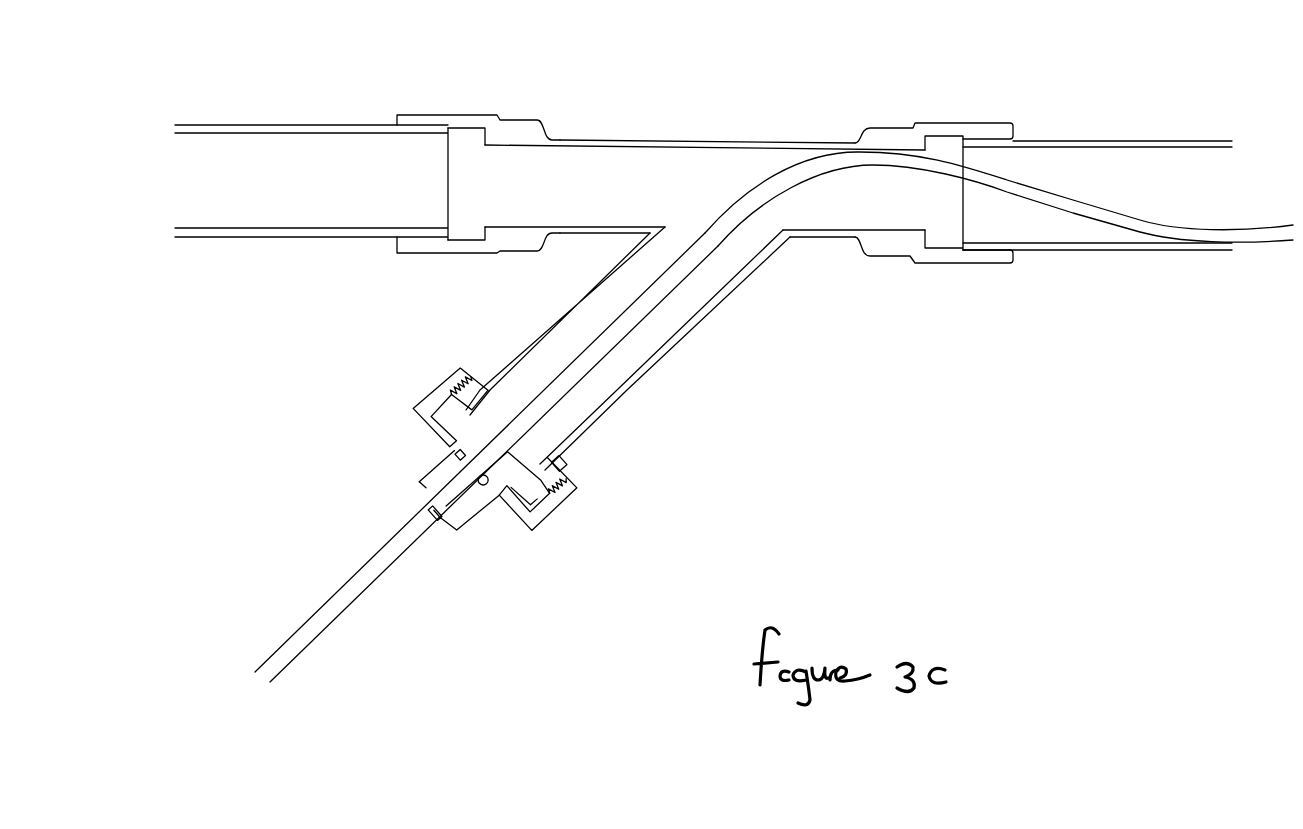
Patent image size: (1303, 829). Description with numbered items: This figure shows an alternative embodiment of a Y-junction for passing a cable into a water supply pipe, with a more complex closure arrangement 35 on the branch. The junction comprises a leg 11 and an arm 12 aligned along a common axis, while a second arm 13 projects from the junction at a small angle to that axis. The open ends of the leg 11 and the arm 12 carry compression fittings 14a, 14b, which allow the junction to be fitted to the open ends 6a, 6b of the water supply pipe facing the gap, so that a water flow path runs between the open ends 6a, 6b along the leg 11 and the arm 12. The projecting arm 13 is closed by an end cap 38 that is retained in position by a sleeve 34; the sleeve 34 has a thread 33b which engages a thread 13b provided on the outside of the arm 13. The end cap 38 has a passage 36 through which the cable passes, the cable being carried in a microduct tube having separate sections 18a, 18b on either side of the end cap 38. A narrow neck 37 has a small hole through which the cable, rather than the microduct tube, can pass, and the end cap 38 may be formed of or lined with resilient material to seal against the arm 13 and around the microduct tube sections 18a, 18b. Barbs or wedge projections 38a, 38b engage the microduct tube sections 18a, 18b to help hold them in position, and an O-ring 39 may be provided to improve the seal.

The open end of water supply pipe 6a is at (425, 138).
The open end of water supply pipe 6b is at (998, 148).
The leg 11 is at (812, 234).
The arm 12 is at (632, 141).
The arm 13 is at (660, 360).
The thread 13b is at (572, 458).
The compression fitting 14a is at (425, 115).
The compression fitting 14b is at (963, 122).
The microduct tube section 18a is at (331, 613).
The microduct tube section 18b is at (1263, 245).
The thread 33b is at (578, 475).
The sleeve 34 is at (555, 517).
The closure arrangement 35 is at (445, 445).
The passage 36 is at (440, 528).
The narrow neck 37 is at (468, 490).
The end cap 38 is at (465, 530).
The barb or wedge projection 38a is at (422, 492).
The barb or wedge projection 38b is at (477, 452).
The O-ring 39 is at (460, 457).